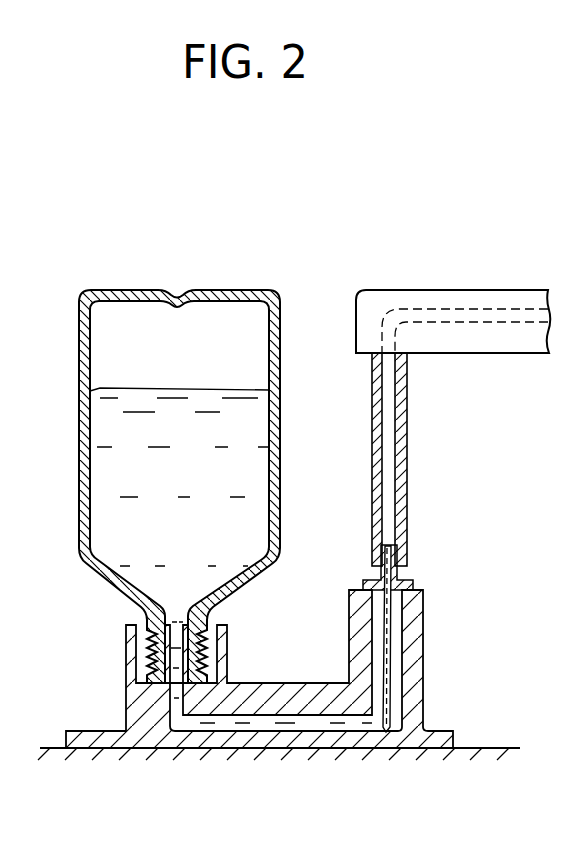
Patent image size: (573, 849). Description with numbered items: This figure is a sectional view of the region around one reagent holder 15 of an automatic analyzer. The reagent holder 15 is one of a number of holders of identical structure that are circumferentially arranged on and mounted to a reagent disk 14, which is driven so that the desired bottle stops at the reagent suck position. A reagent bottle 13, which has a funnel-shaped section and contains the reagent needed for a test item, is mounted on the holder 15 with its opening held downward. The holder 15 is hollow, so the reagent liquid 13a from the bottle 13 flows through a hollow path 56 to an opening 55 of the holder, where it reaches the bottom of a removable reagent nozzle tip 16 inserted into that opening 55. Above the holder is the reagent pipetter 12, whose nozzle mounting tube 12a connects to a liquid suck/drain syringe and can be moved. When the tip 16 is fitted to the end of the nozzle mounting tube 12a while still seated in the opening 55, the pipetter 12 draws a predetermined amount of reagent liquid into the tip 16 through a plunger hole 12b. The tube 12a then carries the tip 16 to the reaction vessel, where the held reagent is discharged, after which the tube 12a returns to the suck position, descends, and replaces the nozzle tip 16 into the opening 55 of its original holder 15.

The reagent pipetter 12 is at (399, 290).
The nozzle mounting tube 12a is at (407, 478).
The plunger hole 12b is at (467, 324).
The reagent bottle 13 is at (110, 290).
The reagent liquid 13a is at (170, 390).
The reagent disk 14 is at (509, 750).
The reagent holder 15 is at (96, 728).
The reagent nozzle tip 16 is at (410, 582).
The opening 55 is at (394, 603).
The hollow path 56 is at (314, 718).